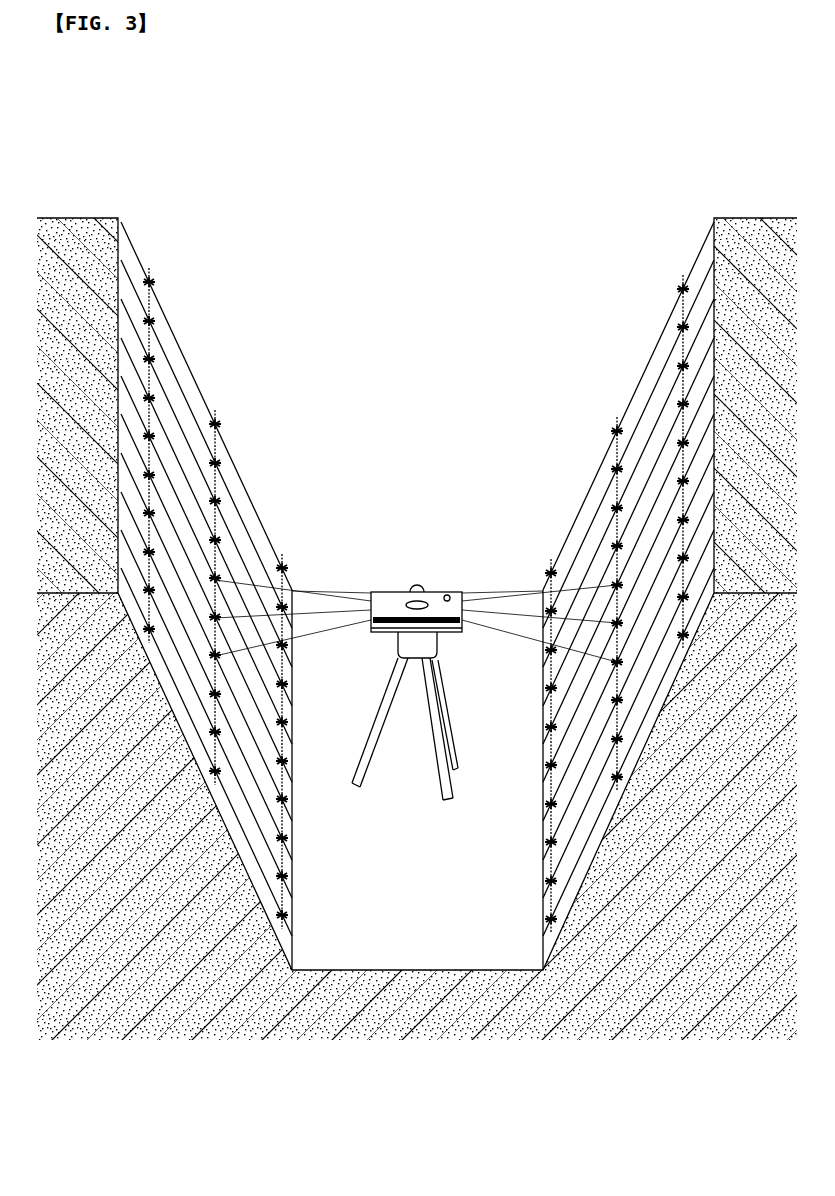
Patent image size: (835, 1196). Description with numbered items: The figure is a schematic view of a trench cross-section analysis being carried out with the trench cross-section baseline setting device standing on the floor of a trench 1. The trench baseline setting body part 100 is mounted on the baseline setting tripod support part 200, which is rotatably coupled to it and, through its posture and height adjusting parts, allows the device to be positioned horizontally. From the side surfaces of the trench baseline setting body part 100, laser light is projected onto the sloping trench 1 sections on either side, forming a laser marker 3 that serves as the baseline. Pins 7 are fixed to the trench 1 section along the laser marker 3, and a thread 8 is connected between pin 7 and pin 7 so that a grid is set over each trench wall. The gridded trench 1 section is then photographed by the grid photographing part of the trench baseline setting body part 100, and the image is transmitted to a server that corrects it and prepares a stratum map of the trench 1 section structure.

The trench 1 is at (604, 172).
The laser marker 3 is at (305, 592).
The pin 7 is at (152, 280).
The thread 8 is at (175, 384).
The trench baseline setting body part 100 is at (418, 588).
The baseline setting tripod support part 200 is at (442, 748).